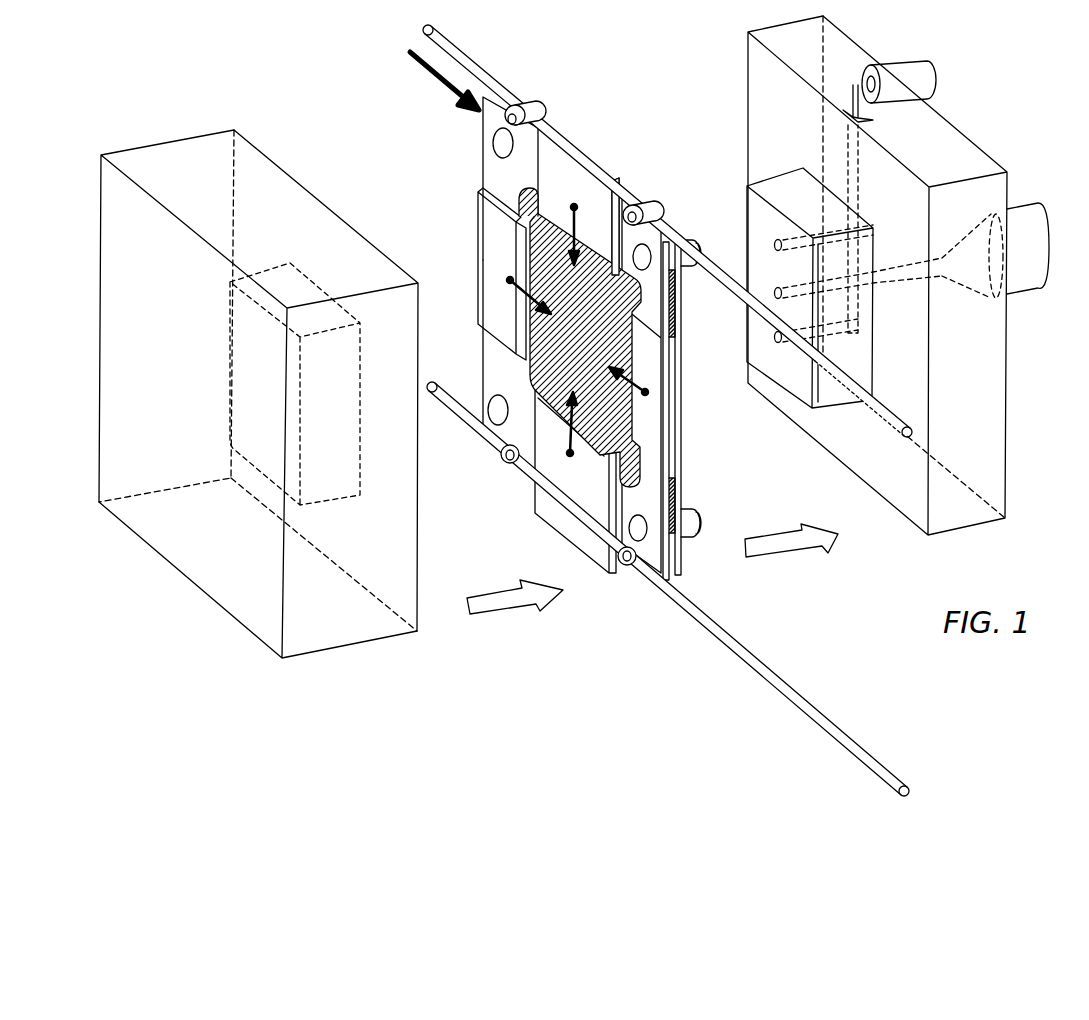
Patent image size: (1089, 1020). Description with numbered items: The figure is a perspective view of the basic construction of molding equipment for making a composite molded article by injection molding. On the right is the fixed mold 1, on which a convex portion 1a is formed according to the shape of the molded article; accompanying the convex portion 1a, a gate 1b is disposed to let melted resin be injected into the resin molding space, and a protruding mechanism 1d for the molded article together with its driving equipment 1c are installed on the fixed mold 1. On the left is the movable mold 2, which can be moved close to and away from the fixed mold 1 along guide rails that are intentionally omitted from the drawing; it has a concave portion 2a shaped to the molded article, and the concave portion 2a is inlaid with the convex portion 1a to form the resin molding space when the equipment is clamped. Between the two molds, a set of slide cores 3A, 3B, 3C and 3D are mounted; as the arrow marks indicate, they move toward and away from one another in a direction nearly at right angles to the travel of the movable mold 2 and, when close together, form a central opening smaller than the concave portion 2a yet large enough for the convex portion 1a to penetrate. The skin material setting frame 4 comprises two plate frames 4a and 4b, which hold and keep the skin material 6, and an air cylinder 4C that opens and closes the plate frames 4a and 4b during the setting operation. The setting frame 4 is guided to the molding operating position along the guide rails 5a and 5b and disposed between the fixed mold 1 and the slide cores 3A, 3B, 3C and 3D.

The fixed mold 1 is at (848, 42).
The convex portion 1a is at (778, 211).
The gate 1b is at (777, 289).
The driving equipment 1c is at (924, 72).
The protruding mechanism 1d is at (777, 243).
The movable mold 2 is at (156, 153).
The concave portion 2a is at (288, 283).
The slide core 3A is at (562, 157).
The slide core 3B is at (658, 368).
The slide core 3C is at (589, 550).
The slide core 3D is at (484, 229).
The skin material setting frame 4 is at (686, 457).
The plate frame 4a is at (636, 580).
The plate frame 4b is at (680, 562).
The air cylinder 4C is at (697, 517).
The guide rail 5a is at (443, 40).
The guide rail 5b is at (447, 408).
The skin material 6 is at (520, 468).